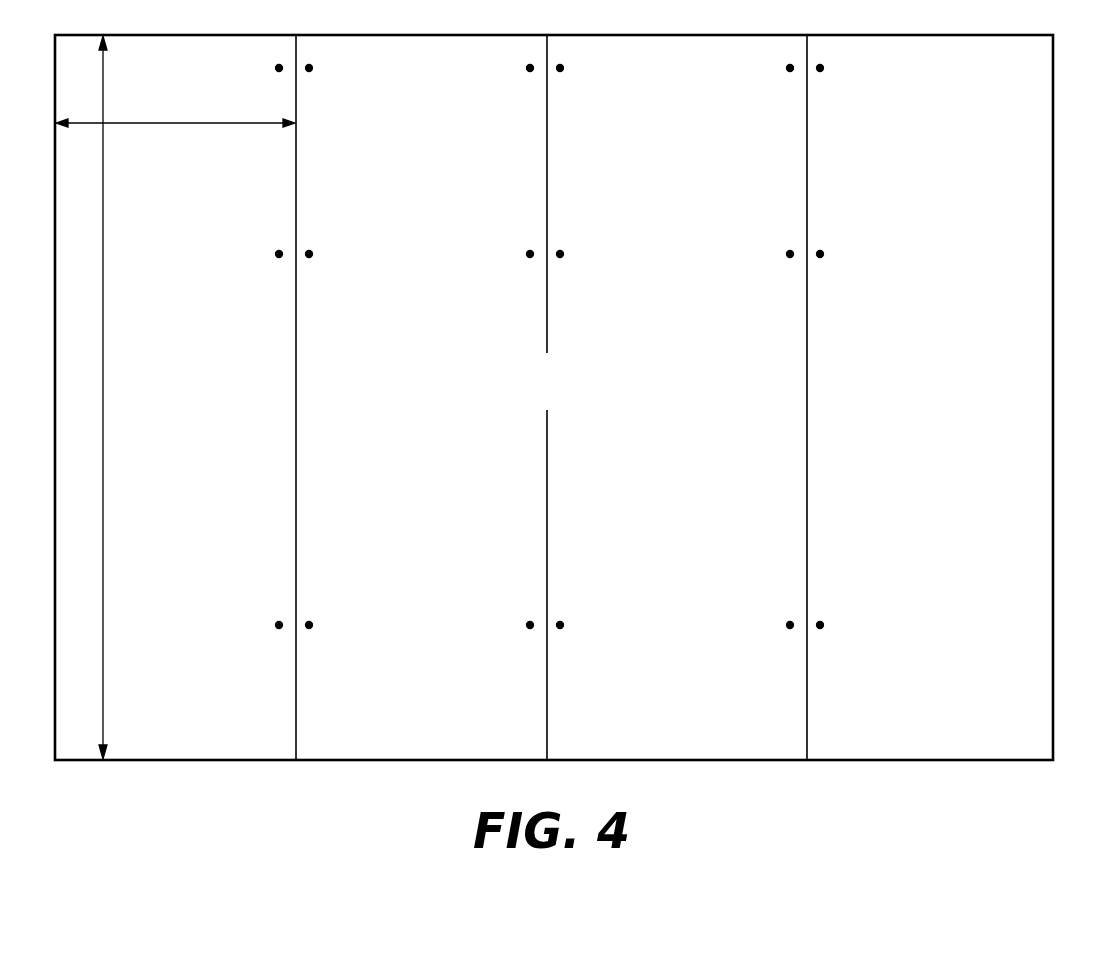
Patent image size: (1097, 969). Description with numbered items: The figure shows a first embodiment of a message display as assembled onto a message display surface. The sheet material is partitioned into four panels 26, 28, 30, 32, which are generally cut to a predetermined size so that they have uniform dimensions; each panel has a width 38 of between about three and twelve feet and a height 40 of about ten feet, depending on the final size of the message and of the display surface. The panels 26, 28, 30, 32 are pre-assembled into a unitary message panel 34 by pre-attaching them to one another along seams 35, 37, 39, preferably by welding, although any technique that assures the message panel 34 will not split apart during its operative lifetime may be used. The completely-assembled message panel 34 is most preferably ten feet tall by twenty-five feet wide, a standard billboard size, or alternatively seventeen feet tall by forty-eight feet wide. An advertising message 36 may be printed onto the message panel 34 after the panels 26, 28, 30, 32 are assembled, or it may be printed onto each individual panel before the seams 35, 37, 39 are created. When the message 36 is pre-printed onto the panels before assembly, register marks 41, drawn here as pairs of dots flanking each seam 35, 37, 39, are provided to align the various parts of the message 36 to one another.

The panel 26 is at (194, 490).
The panel 28 is at (433, 490).
The panel 30 is at (684, 490).
The panel 32 is at (946, 490).
The message panel 34 is at (866, 761).
The seam 35 is at (296, 325).
The message 36 is at (647, 360).
The seam 37 is at (547, 148).
The width 38 is at (174, 123).
The seam 39 is at (807, 172).
The height 40 is at (103, 288).
The register marks 41 is at (279, 68).